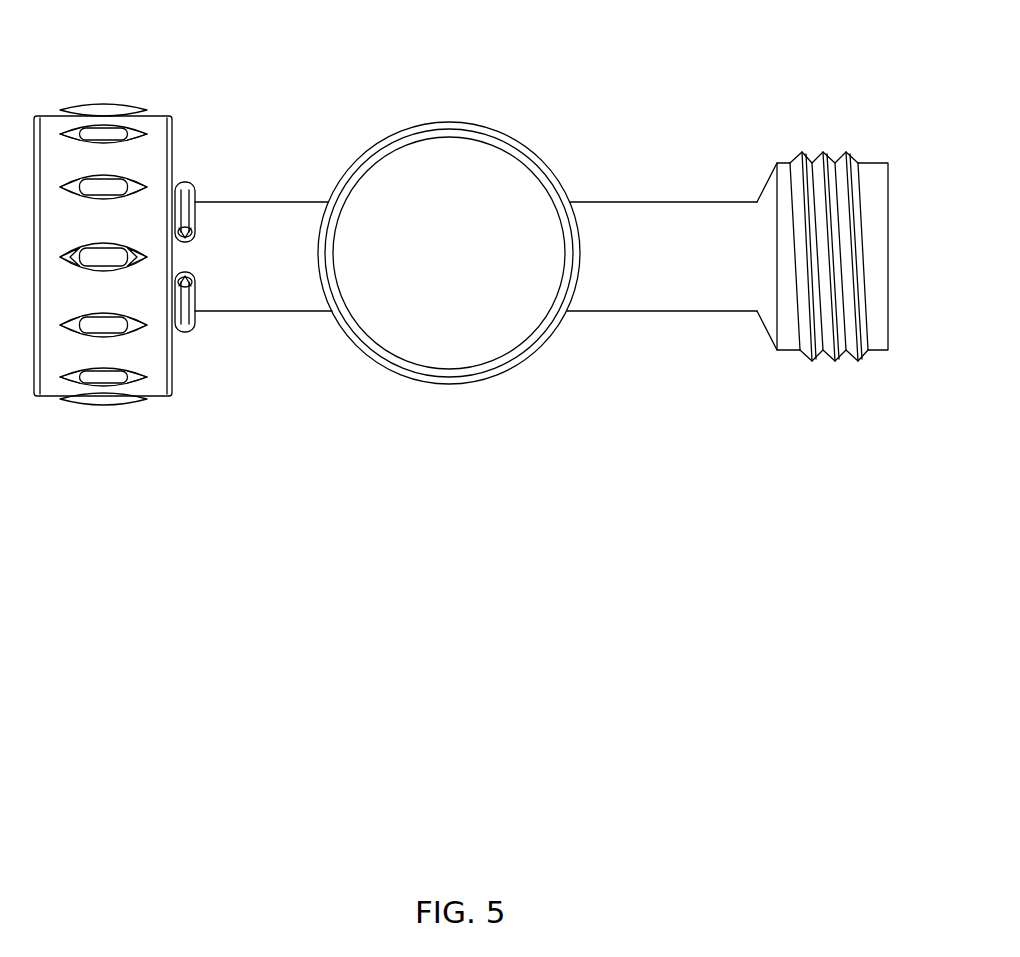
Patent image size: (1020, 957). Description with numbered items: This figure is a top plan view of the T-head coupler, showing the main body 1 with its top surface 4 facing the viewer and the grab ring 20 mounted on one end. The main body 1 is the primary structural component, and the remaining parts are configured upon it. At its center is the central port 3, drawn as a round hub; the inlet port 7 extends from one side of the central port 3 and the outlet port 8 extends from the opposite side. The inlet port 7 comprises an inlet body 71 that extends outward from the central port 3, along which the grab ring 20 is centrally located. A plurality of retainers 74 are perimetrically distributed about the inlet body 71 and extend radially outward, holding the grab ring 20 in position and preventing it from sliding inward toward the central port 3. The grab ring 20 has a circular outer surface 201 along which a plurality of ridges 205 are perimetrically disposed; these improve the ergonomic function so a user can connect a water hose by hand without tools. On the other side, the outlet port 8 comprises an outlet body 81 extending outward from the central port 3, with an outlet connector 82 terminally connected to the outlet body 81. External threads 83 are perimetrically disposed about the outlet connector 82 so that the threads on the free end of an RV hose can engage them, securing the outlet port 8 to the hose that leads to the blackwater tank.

The main body 1 is at (461, 319).
The central port 3 is at (449, 279).
The top surface 4 is at (447, 173).
The inlet port 7 is at (263, 280).
The inlet body 71 is at (278, 228).
The plurality of retainers 74 is at (188, 182).
The outlet port 8 is at (727, 265).
The outlet body 81 is at (658, 220).
The outlet connector 82 is at (793, 352).
The external threads 83 is at (818, 163).
The grab ring 20 is at (121, 280).
The outer surface 201 is at (153, 388).
The plurality of ridges 205 is at (103, 107).